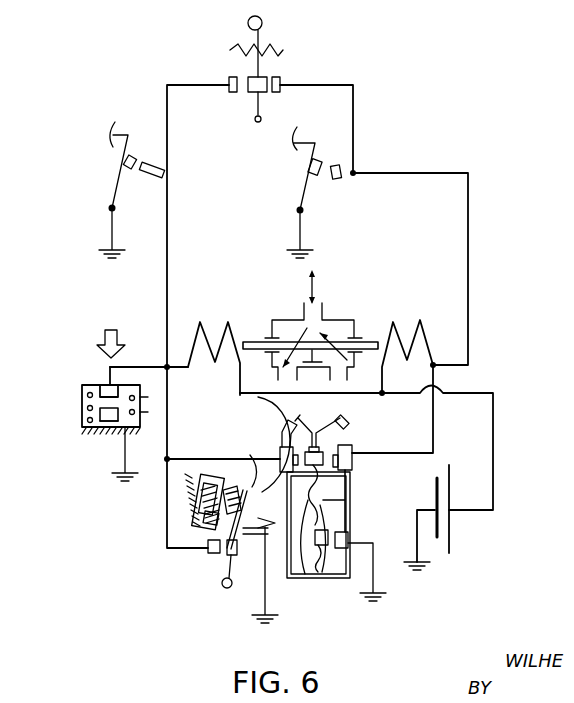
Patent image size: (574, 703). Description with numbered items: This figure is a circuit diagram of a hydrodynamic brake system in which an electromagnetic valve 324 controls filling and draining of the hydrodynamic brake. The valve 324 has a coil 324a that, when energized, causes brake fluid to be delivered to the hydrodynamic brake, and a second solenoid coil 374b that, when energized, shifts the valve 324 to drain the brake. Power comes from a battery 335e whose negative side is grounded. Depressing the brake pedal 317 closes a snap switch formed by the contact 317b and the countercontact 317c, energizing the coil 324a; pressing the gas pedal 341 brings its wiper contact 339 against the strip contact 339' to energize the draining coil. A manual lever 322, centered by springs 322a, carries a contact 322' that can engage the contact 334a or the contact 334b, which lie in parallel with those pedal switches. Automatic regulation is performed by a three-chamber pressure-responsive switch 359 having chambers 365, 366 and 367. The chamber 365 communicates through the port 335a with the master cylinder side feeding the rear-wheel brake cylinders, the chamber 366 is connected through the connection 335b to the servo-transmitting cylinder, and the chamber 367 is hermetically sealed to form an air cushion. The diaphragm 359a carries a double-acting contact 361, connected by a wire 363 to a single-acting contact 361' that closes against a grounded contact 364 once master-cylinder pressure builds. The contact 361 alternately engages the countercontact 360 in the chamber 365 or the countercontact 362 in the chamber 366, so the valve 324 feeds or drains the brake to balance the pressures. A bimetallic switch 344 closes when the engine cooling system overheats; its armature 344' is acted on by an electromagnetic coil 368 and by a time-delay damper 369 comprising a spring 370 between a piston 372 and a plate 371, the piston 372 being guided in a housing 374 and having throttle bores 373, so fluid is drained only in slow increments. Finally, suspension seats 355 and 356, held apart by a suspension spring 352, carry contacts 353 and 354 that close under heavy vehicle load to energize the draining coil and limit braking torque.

The lever 322 is at (285, 69).
The springs 322a is at (230, 50).
The contact 322' is at (298, 70).
The contact 334a is at (229, 80).
The contact 334b is at (280, 80).
The gas pedal 341 is at (125, 148).
The contact 339 is at (96, 176).
The countercontact 339' is at (180, 174).
The brake pedal 317 is at (316, 145).
The contact 317b is at (318, 176).
The countercontact 317c is at (336, 180).
The electromagnetic valve 324 is at (340, 320).
The coil 324a is at (420, 333).
The resistance coil 374b is at (194, 335).
The contact 353 is at (110, 388).
The suspension seat 355 is at (82, 387).
The suspension spring 352 is at (87, 408).
The suspension seat 356 is at (82, 423).
The contact 354 is at (105, 428).
The port 335a is at (240, 395).
The diaphragm 359a is at (262, 463).
The armature 344' is at (221, 460).
The plate 371 is at (237, 490).
The housing 374 is at (190, 488).
The throttle bores 373 is at (188, 503).
The piston 372 is at (197, 523).
The time-delay mechanical damper 369 is at (196, 530).
The spring 370 is at (209, 555).
The bimetallic switch 344 is at (237, 555).
The electromagnetic coil 368 is at (237, 553).
The single-acting contact 361' is at (273, 560).
The countercontact 360 is at (317, 431).
The connection 335b is at (332, 432).
The double-acting contact 361 is at (364, 448).
The countercontact 362 is at (352, 468).
The chamber 366 is at (337, 487).
The pressure-responsive switch 359 is at (350, 513).
The wire 363 is at (318, 515).
The contact 364 is at (348, 545).
The chamber 365 is at (303, 565).
The chamber 367 is at (333, 567).
The battery 335e is at (450, 478).